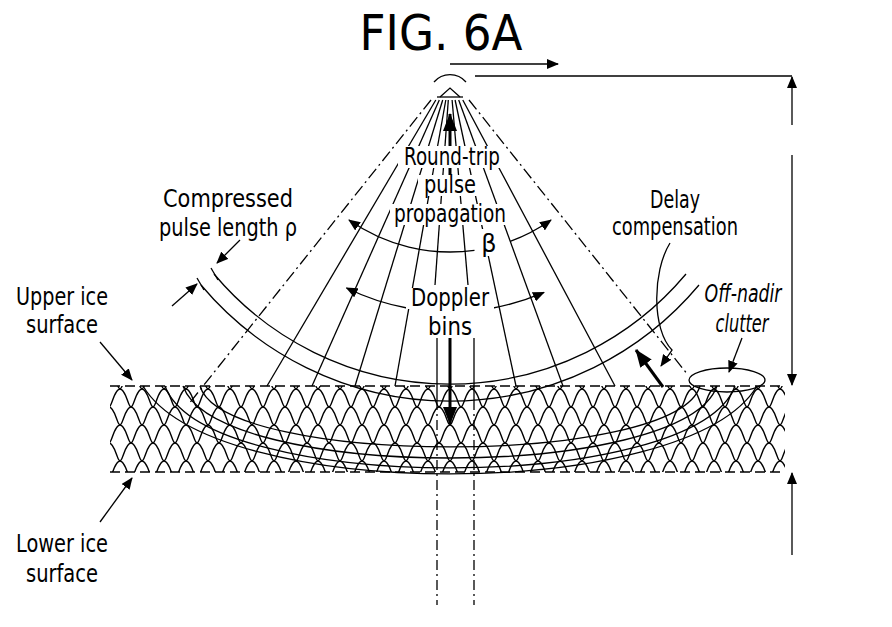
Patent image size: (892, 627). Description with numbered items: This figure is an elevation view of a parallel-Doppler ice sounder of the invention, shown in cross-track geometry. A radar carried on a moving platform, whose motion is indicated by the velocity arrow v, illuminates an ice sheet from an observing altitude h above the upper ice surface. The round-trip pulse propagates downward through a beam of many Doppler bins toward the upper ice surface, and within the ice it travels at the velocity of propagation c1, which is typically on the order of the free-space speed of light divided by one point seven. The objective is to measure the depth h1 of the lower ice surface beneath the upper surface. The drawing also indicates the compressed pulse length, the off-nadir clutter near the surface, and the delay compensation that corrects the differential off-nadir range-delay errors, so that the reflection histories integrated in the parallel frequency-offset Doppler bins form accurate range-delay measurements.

The observing altitude h is at (637, 230).
The depth of the lower surface of the ice sheet h1 is at (797, 479).
The velocity of propagation c1 is at (734, 419).
The platform velocity v is at (512, 63).